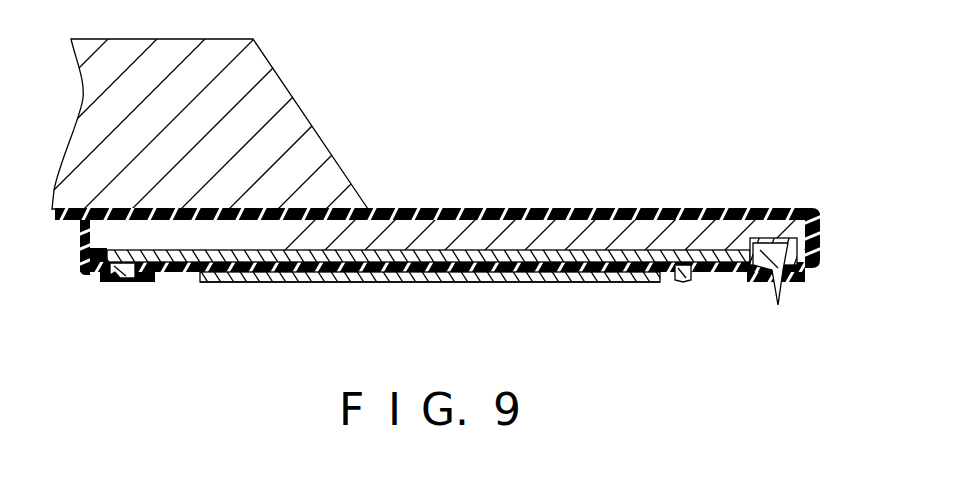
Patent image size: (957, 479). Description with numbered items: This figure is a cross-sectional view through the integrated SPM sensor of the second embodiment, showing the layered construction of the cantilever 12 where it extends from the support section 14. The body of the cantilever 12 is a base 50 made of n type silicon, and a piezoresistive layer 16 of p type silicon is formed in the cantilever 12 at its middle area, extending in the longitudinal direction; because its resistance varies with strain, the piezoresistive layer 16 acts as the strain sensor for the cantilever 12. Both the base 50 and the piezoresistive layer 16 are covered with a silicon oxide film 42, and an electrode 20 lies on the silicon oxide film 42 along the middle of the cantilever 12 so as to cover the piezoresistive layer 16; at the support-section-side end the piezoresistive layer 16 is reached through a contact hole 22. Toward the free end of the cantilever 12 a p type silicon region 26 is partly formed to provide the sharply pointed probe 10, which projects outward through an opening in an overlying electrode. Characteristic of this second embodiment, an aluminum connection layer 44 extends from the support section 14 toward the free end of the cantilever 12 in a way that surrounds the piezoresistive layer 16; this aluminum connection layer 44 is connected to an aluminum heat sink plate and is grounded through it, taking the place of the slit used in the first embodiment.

The probe 10 is at (783, 285).
The cantilever 12 is at (510, 207).
The support section 14 is at (320, 147).
The piezoresistive layer 16 is at (570, 283).
The electrode 20 is at (458, 283).
The contact hole 22 is at (117, 283).
The p type silicon region 26 is at (773, 240).
The silicon oxide film 42 is at (617, 210).
The aluminum connection layer 44 is at (688, 282).
The base 50 is at (697, 230).